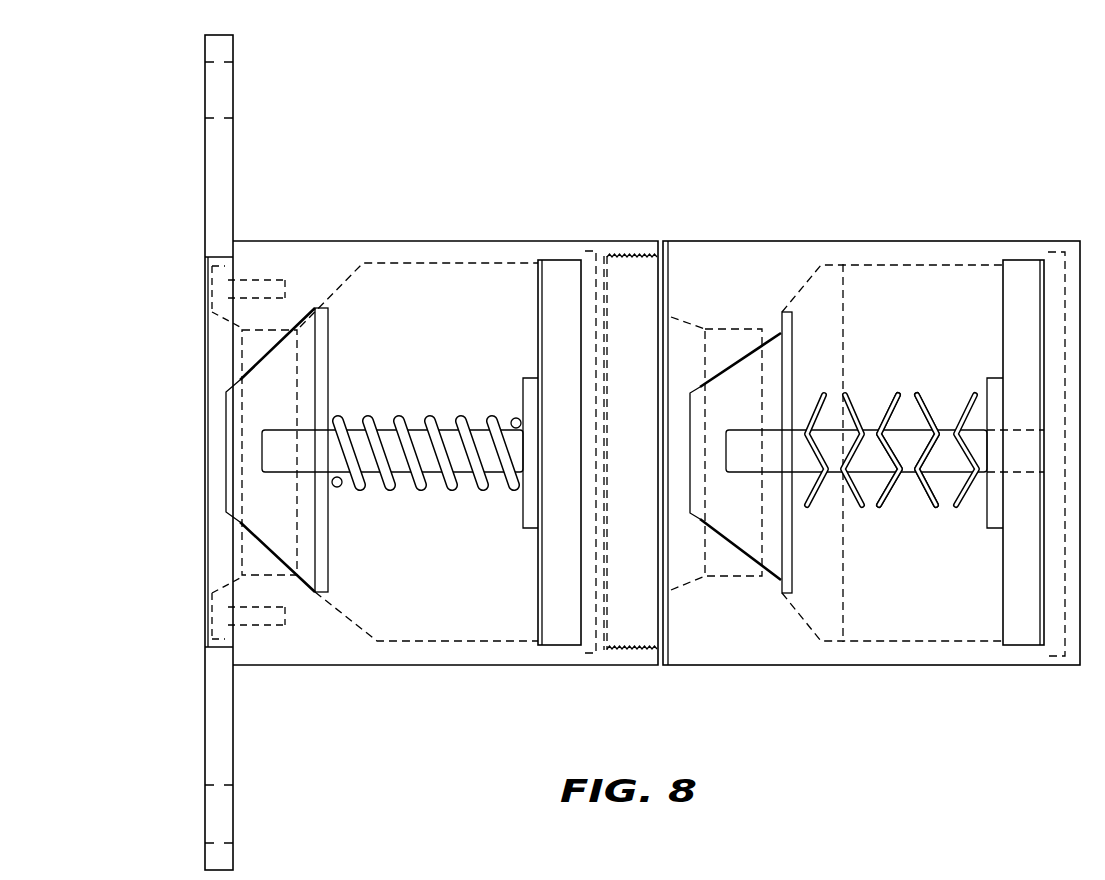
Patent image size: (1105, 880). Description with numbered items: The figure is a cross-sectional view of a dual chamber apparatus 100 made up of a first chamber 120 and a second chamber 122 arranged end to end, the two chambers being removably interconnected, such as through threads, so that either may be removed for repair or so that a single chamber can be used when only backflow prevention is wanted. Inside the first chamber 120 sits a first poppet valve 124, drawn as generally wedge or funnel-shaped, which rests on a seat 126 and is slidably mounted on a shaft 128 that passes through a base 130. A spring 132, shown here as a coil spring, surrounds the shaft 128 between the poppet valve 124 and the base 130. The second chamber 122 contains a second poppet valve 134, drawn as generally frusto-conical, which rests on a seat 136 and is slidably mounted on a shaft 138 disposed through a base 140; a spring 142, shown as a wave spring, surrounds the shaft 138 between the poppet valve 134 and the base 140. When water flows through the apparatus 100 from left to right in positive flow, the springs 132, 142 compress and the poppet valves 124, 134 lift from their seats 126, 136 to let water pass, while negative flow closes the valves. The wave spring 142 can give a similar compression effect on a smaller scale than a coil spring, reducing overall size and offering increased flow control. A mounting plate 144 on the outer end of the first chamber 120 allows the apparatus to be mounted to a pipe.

The apparatus 100 is at (415, 116).
The first chamber 120 is at (431, 241).
The second chamber 122 is at (836, 241).
The first poppet valve 124 is at (258, 392).
The seat 126 is at (282, 337).
The shaft 128 is at (277, 450).
The base 130 is at (559, 273).
The spring 132 is at (365, 487).
The second poppet valve 134 is at (746, 560).
The seat 136 is at (743, 341).
The shaft 138 is at (834, 441).
The base 140 is at (1028, 278).
The spring 142 is at (880, 507).
The mounting plate 144 is at (216, 176).